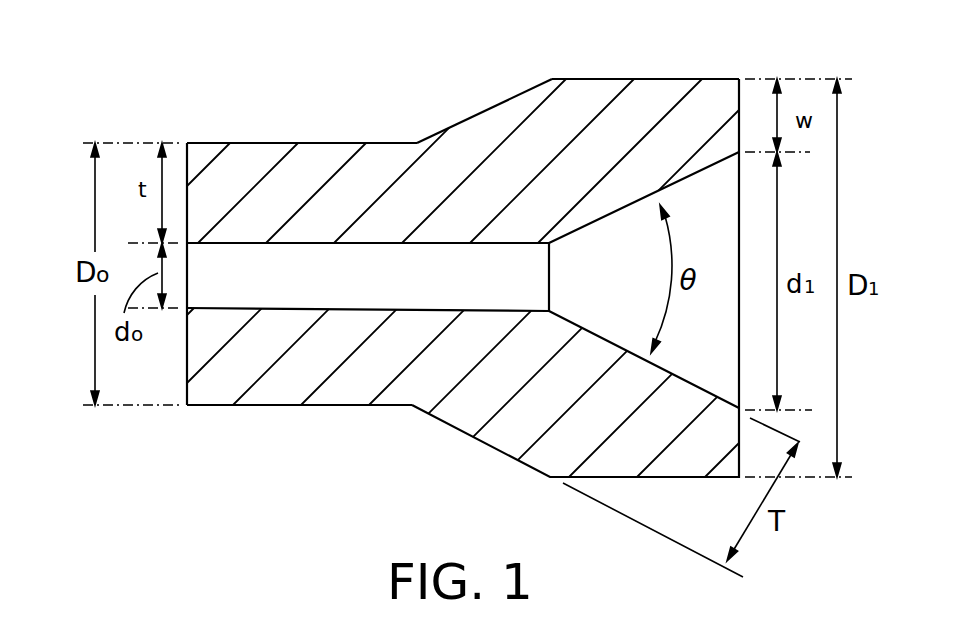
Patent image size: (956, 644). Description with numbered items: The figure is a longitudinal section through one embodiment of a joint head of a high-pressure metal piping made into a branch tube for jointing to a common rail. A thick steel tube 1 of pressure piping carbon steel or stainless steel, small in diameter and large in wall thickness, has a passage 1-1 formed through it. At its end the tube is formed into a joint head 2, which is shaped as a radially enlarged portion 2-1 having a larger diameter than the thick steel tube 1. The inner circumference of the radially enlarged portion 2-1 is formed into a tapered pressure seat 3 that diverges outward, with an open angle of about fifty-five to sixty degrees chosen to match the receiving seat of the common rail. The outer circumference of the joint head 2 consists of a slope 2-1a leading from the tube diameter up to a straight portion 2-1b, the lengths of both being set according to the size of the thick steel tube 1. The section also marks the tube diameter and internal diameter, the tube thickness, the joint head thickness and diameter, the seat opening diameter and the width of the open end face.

The thick steel tube 1 is at (293, 383).
The passage 1-1 is at (248, 268).
The joint head 2 is at (489, 83).
The radially enlarged portion 2-1 is at (597, 97).
The slope 2-1a is at (470, 113).
The straight portion 2-1b is at (678, 79).
The pressure seat 3 is at (688, 176).